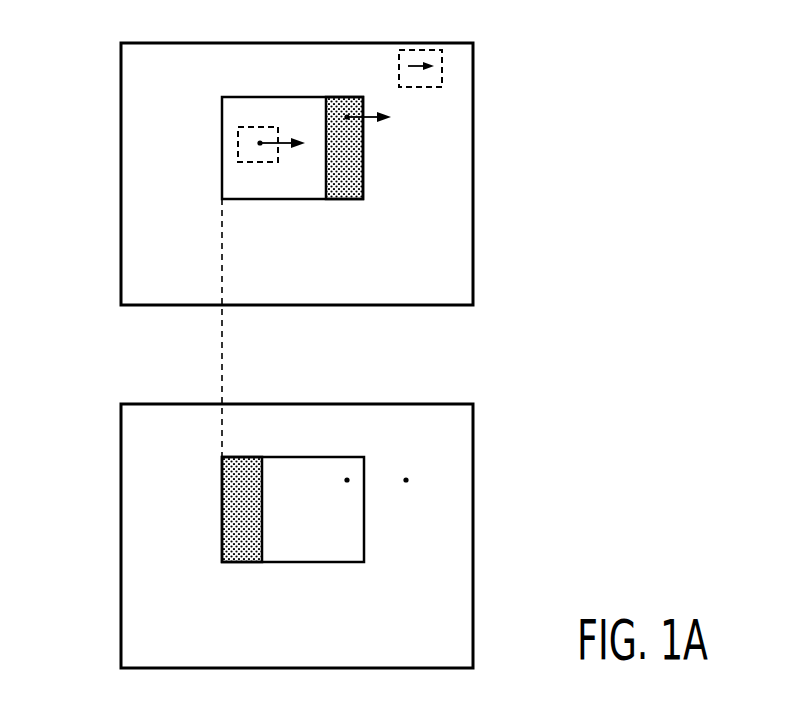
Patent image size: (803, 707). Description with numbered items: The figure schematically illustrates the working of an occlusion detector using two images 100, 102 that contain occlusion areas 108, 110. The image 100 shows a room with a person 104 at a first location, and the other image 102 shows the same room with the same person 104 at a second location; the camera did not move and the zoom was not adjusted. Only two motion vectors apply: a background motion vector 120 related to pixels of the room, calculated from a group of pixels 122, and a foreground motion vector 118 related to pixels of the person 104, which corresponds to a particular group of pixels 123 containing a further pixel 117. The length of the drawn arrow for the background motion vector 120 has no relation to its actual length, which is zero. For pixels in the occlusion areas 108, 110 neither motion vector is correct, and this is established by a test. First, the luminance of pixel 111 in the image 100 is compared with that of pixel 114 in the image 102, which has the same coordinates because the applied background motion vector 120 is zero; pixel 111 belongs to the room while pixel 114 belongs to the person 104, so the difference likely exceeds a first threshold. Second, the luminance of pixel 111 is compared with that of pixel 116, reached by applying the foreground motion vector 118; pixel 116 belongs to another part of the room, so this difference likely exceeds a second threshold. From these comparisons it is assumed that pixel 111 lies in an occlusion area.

The image 100 is at (121, 78).
The image 102 is at (121, 456).
The person 104 is at (268, 95).
The occlusion area 108 is at (364, 181).
The occlusion area 110 is at (222, 527).
The pixel 111 is at (347, 116).
The pixel 114 is at (347, 480).
The pixel 116 is at (406, 480).
The further pixel 117 is at (260, 143).
The foreground motion vector 118 is at (362, 106).
The background motion vector 120 is at (415, 66).
The group of pixels 122 is at (442, 72).
The group of pixels 123 is at (238, 141).